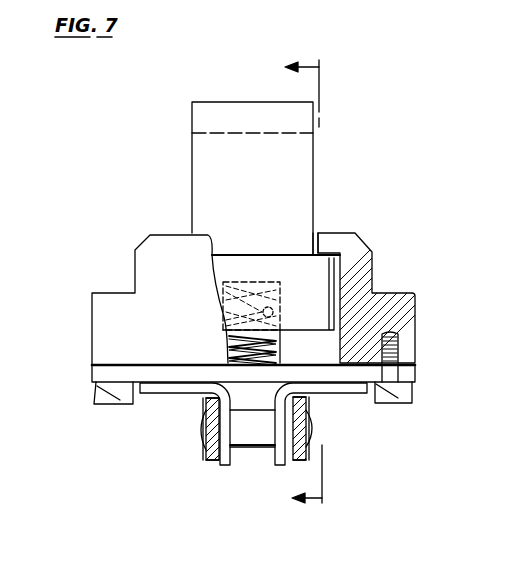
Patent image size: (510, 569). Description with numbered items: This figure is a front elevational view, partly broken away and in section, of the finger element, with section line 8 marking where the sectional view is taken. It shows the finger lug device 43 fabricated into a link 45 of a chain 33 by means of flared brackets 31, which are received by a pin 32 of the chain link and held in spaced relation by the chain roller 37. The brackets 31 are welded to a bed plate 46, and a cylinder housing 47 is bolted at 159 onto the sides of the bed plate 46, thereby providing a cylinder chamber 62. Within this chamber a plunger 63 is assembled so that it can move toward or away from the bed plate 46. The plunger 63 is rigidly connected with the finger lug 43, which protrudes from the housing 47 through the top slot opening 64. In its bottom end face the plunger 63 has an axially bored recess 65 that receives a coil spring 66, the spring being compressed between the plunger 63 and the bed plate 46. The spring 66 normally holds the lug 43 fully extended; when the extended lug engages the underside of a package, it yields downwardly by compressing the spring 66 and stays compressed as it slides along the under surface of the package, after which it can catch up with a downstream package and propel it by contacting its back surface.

The section line 8- 8 is at (296, 283).
The flared brackets 31 is at (155, 386).
The pin 32 is at (314, 430).
The chain 33 is at (212, 466).
The chain roller 37 is at (256, 437).
The finger lug 43 is at (222, 107).
The link 45 is at (205, 454).
The bed plate 46 is at (401, 374).
The cylinder housing 47 is at (410, 293).
The cylinder chamber 62 is at (324, 358).
The plunger 63 is at (323, 275).
The top slot opening 64 is at (319, 235).
The axially bored recess 65 is at (282, 310).
The coil spring 66 is at (226, 349).
The bolts 159 is at (106, 397).